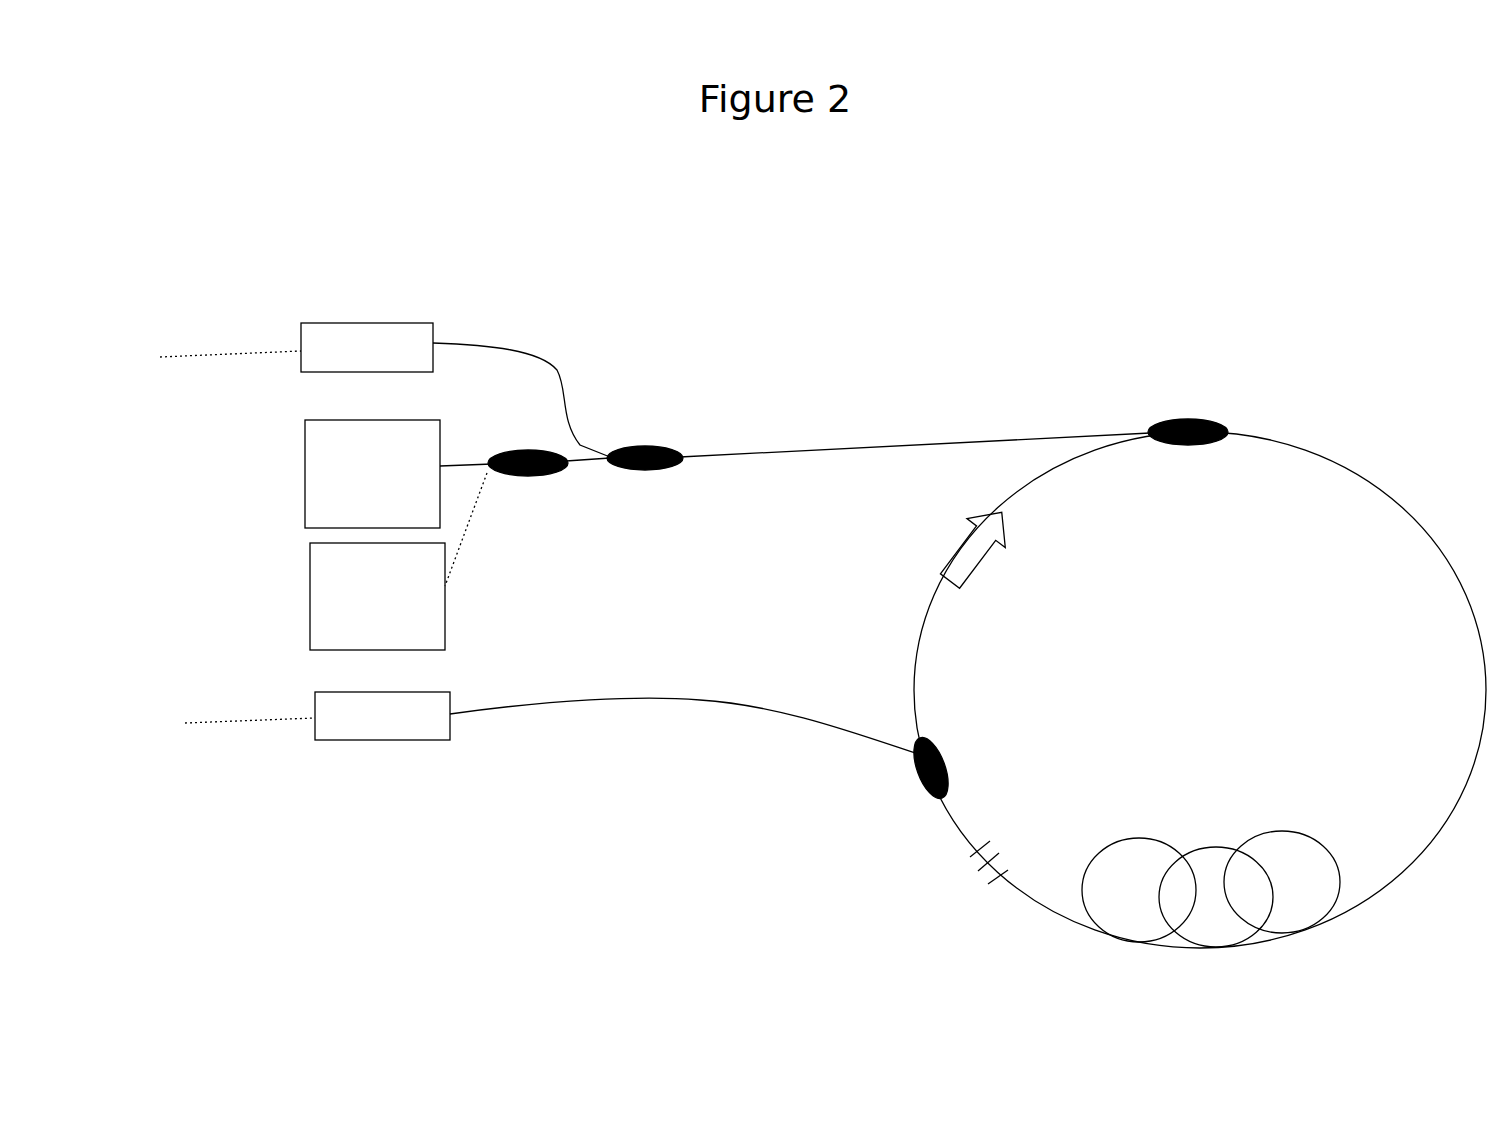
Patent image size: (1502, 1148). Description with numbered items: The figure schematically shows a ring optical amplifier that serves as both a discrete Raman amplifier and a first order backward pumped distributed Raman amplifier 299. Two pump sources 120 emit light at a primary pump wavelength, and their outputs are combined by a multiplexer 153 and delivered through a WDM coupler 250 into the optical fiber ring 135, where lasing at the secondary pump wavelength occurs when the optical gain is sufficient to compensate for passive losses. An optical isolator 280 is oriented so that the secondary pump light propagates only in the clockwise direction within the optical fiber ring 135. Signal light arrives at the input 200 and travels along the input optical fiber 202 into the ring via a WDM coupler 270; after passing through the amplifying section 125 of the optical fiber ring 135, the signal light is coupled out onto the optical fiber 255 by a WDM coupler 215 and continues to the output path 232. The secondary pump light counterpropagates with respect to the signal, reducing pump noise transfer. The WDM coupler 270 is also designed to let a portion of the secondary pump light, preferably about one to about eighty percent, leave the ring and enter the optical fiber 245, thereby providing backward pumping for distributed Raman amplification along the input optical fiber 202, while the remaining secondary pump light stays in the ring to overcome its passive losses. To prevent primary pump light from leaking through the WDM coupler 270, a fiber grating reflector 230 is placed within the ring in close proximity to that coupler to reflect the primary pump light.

The pump source 120 is at (304, 488).
The amplifying section 125 is at (1245, 834).
The optical fiber ring 135 is at (1358, 473).
The multiplexer 153 is at (516, 478).
The input 200 is at (357, 744).
The input optical fiber 202 is at (225, 724).
The WDM coupler 215 is at (1188, 419).
The fiber grating reflector 230 is at (340, 322).
The output signal path 232 is at (210, 359).
The optical fiber 245 is at (888, 744).
The WDM coupler 250 is at (649, 443).
The optical fiber 255 is at (762, 452).
The WDM coupler 270 is at (917, 783).
The optical isolator 280 is at (990, 552).
The distributed Raman amplifier 299 is at (1040, 315).